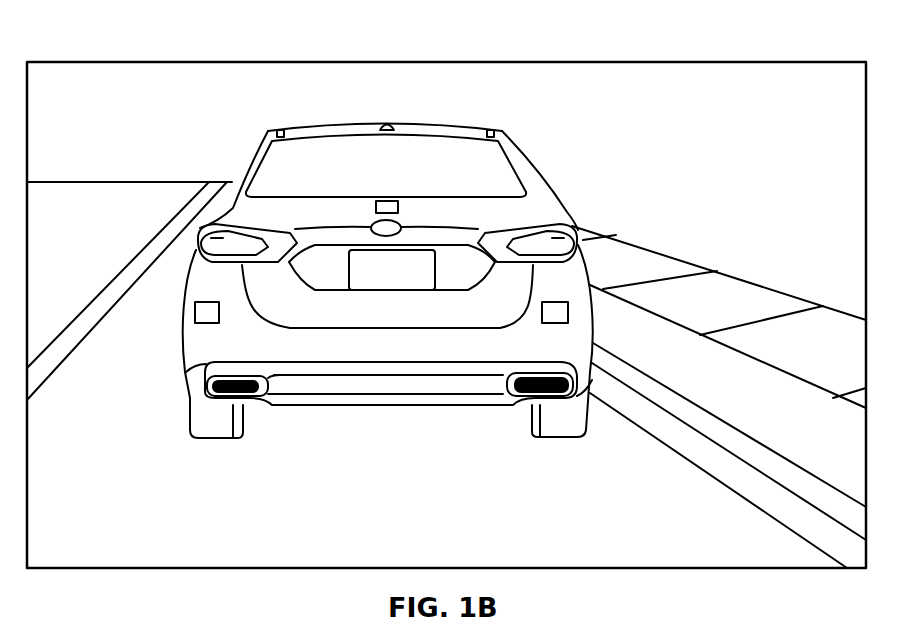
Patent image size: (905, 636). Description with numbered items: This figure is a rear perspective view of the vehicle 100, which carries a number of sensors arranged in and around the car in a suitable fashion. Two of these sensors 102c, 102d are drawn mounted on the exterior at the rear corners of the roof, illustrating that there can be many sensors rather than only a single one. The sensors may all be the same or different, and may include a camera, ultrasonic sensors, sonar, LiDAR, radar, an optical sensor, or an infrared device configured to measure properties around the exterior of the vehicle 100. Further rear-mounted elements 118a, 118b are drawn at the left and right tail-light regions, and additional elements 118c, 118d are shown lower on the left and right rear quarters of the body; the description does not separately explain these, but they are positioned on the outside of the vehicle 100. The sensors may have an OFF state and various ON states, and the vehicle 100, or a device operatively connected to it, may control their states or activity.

The vehicle 100 is at (236, 146).
The sensor 102c is at (278, 122).
The sensor 102d is at (487, 122).
The rear sensor (left taillight area) 118a is at (200, 236).
The rear sensor (right taillight area) 118b is at (573, 220).
The rear side sensor 118c is at (195, 312).
The rear side sensor 118d is at (568, 311).